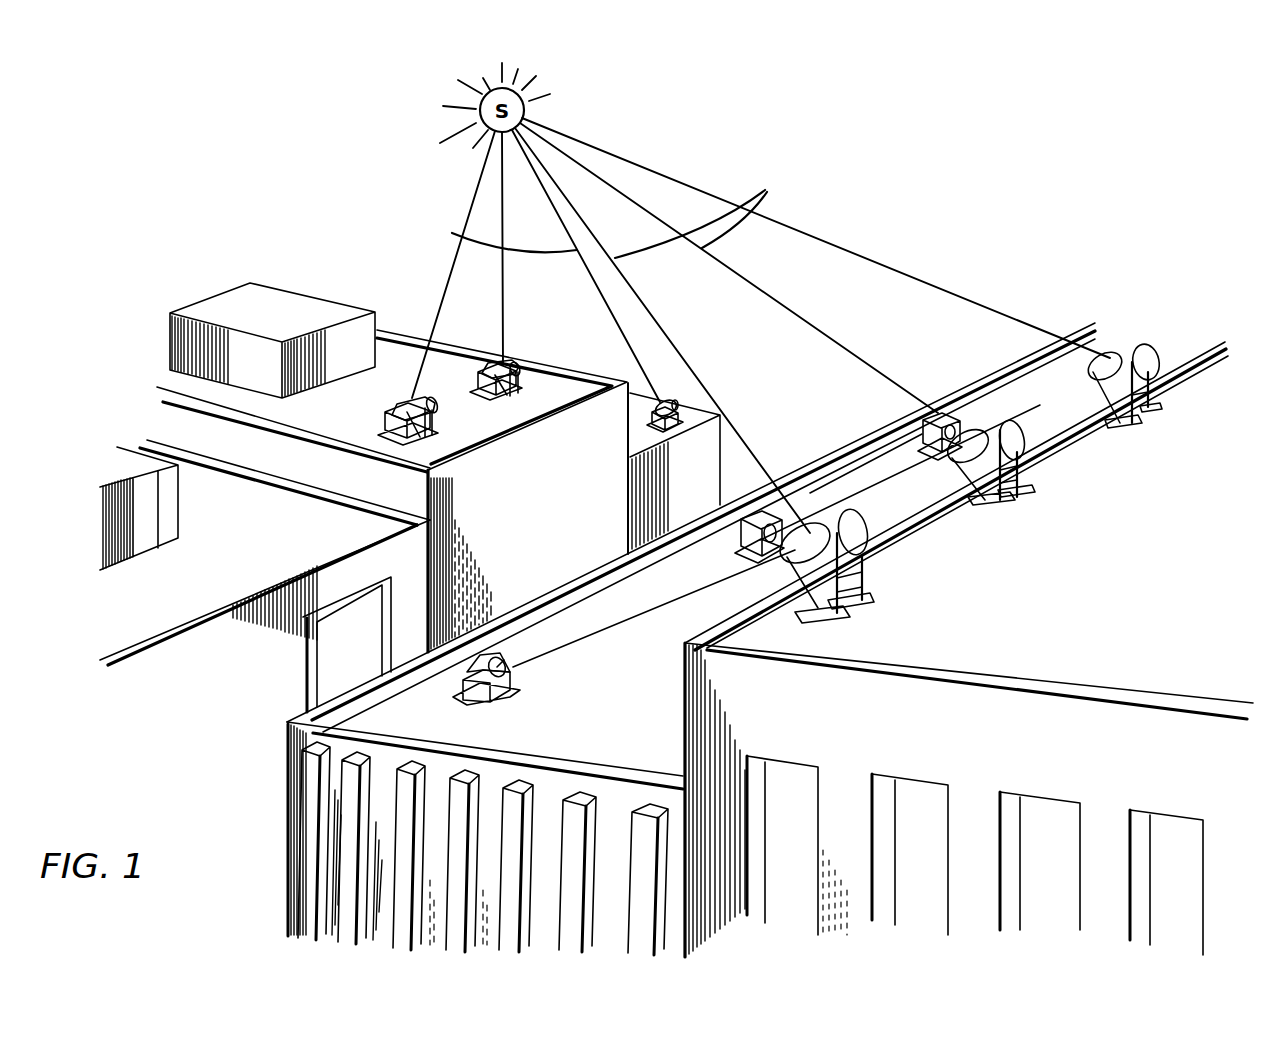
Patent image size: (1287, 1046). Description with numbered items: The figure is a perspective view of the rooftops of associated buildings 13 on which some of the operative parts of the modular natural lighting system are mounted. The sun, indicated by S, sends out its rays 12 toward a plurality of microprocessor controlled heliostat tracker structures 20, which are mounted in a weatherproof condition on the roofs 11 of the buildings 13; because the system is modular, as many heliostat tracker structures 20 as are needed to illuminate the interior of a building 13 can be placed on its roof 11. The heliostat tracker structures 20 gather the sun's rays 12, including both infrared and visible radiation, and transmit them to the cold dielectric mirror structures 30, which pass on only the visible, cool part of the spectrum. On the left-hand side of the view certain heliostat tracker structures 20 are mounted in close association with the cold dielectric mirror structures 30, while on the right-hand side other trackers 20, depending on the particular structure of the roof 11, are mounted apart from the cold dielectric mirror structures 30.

The roof 11 is at (398, 379).
The sun's rays 12 is at (761, 325).
The building 13 is at (543, 492).
The heliostat tracker structure 20 is at (487, 420).
The cold dielectric mirror structure 30 is at (380, 414).